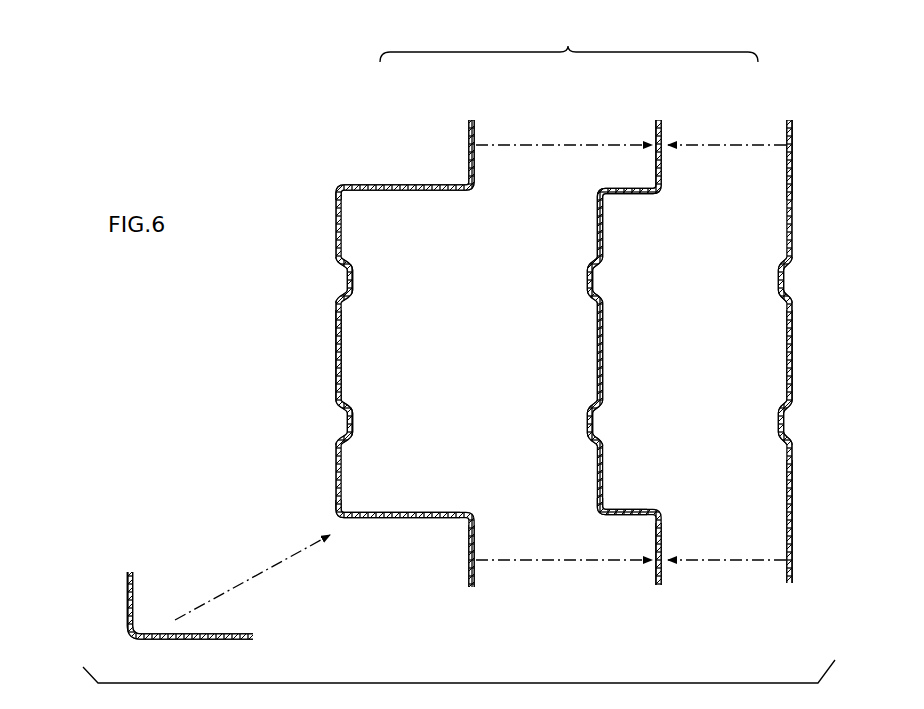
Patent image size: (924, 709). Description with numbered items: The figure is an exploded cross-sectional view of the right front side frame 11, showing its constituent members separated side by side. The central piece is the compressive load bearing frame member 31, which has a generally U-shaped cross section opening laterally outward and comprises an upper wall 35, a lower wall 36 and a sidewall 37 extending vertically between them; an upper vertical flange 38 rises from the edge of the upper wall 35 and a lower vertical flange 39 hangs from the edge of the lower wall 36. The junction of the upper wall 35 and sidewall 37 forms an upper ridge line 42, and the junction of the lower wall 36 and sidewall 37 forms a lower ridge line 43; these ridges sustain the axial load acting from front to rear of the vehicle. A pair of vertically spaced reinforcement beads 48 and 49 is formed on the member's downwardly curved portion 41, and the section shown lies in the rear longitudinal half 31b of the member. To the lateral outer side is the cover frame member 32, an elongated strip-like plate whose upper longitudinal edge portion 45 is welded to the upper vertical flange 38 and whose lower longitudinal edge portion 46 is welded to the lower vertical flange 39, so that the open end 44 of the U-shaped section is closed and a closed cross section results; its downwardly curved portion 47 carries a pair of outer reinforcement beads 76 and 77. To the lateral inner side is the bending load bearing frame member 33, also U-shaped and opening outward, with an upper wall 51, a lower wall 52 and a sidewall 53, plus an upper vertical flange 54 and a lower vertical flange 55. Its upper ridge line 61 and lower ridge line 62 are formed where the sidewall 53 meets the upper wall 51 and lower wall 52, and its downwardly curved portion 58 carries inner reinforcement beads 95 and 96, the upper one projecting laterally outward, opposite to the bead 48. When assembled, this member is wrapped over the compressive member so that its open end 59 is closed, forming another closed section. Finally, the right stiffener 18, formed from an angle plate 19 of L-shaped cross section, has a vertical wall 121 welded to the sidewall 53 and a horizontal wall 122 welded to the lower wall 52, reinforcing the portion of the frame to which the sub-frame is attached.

The right front side frame 11 is at (569, 42).
The bending load bearing frame member 33 is at (430, 181).
The compressive load bearing frame member 31 is at (641, 183).
The cover frame member 32 is at (783, 128).
The upper wall 51 is at (390, 185).
The upper vertical flange 54 is at (469, 148).
The open end 59 is at (472, 192).
The upper ridge line 61 is at (336, 190).
The downwardly curved portion 58 is at (335, 340).
The sidewall 53 is at (335, 368).
The upper inner reinforcement bead 95 is at (352, 282).
The lower inner reinforcement bead 96 is at (352, 422).
The lower ridge line 62 is at (336, 515).
The lower wall 52 is at (392, 520).
The lower vertical flange 55 is at (468, 560).
The upper wall 35 is at (626, 189).
The upper vertical flange 38 is at (663, 130).
The upper ridge line 42 is at (598, 192).
The open end 44 is at (661, 195).
The rear longitudinal half 31b is at (596, 245).
The upper reinforcement bead 48 is at (590, 282).
The sidewall 37 is at (597, 320).
The downwardly curved portion 41 is at (597, 370).
The lower reinforcement bead 49 is at (590, 425).
The lower ridge line 43 is at (597, 512).
The lower wall 36 is at (600, 516).
The lower vertical flange 39 is at (656, 563).
The upper longitudinal edge portion 45 is at (793, 158).
The upper outer reinforcement bead 76 is at (781, 280).
The downwardly curved portion 47 is at (793, 350).
The lower outer reinforcement bead 77 is at (781, 422).
The lower longitudinal edge portion 46 is at (793, 545).
The right stiffener 18 is at (123, 566).
The angle plate 19 is at (126, 592).
The vertical wall 121 is at (128, 615).
The horizontal wall 122 is at (212, 648).